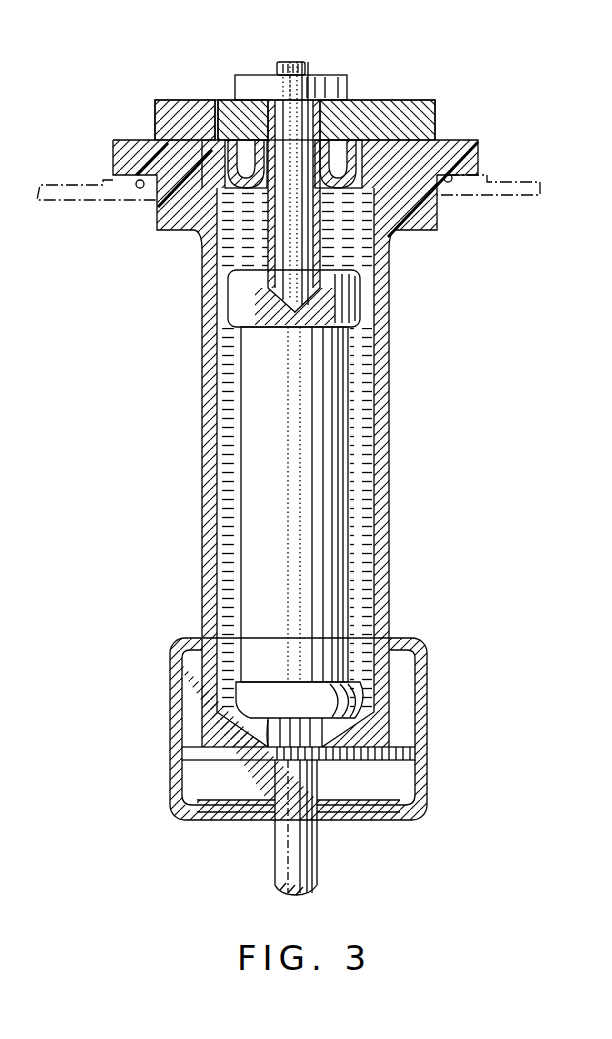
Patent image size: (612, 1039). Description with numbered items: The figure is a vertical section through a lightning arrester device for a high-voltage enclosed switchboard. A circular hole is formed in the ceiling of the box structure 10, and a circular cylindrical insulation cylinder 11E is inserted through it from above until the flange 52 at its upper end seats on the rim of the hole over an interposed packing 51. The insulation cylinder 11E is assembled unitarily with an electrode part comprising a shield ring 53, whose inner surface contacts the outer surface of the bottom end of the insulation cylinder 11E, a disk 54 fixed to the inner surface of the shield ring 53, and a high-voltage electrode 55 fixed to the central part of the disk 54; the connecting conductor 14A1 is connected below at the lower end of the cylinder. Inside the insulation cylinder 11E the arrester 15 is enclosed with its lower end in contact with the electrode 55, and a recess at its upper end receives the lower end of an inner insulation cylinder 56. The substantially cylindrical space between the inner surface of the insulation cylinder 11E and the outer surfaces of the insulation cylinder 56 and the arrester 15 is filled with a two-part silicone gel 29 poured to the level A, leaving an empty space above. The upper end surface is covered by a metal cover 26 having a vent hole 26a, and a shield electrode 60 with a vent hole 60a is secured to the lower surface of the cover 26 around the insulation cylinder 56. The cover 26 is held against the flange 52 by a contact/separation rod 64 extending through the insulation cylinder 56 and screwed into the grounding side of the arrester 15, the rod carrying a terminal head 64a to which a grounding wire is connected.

The terminal head 64a is at (297, 62).
The vent hole 26a is at (225, 100).
The metal cover 26 is at (368, 108).
The vent hole 60a is at (210, 145).
The level A is at (205, 163).
The flange 52 is at (460, 142).
The box structure 10 is at (512, 180).
The packing 51 is at (450, 184).
The contact/separation rod 64 is at (305, 135).
The shield electrode 60 is at (356, 166).
The insulation cylinder 11E is at (386, 476).
The insulation cylinder 56 is at (266, 224).
The silicone gel 29 is at (226, 420).
The lightning arrester 15 is at (248, 573).
The shield ring 53 is at (426, 716).
The disk 54 is at (352, 755).
The high-voltage electrode 55 is at (270, 735).
The connecting conductor 14A1 is at (318, 858).